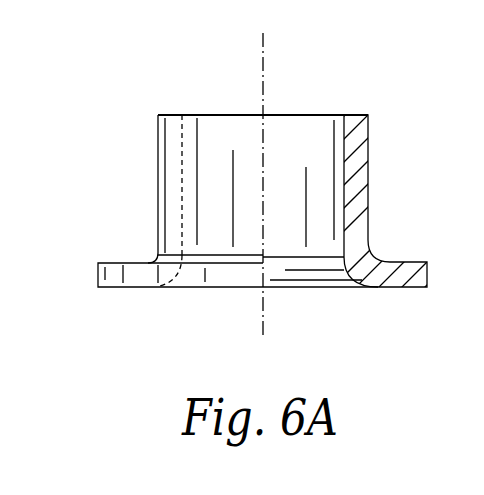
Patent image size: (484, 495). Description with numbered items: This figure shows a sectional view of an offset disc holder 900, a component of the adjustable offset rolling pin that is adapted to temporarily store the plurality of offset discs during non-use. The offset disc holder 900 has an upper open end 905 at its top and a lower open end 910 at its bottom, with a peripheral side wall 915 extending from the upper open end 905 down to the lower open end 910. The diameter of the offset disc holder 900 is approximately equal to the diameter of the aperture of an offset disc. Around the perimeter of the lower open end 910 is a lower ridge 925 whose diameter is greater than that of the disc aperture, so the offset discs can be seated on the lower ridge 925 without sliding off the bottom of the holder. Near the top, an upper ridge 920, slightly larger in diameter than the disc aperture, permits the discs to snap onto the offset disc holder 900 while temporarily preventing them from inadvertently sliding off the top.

The offset disc holder 900 is at (329, 70).
The upper open end 905 is at (218, 107).
The lower open end 910 is at (297, 296).
The peripheral side wall 915 is at (158, 192).
The upper ridge 920 is at (357, 115).
The lower ridge 925 is at (98, 273).